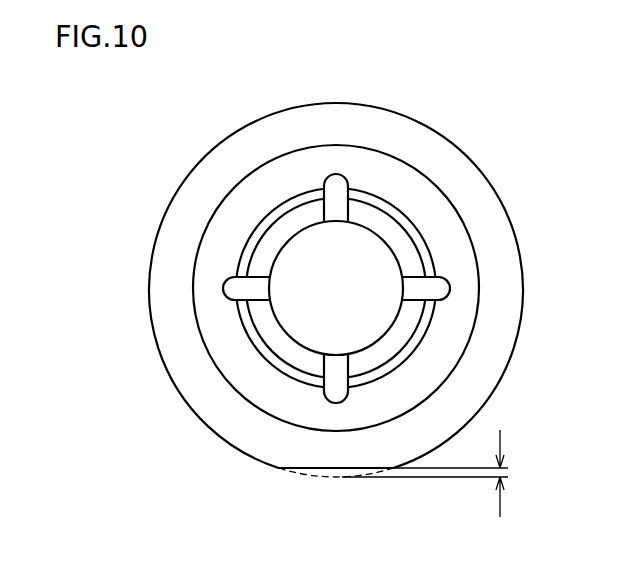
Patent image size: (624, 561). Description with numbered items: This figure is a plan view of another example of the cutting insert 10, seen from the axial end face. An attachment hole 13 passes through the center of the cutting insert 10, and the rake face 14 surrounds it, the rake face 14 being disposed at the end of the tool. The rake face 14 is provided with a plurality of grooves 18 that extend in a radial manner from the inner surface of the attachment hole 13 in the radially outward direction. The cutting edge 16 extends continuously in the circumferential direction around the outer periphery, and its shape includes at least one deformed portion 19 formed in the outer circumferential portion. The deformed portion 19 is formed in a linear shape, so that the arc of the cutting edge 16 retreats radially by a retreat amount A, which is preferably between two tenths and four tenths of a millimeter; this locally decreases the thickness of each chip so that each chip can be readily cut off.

The cutting insert 10 is at (396, 92).
The attachment hole 13 is at (398, 345).
The rake face 14 is at (498, 287).
The cutting edge 16 is at (470, 153).
The grooves 18 is at (335, 385).
The deformed portion 19 is at (333, 468).